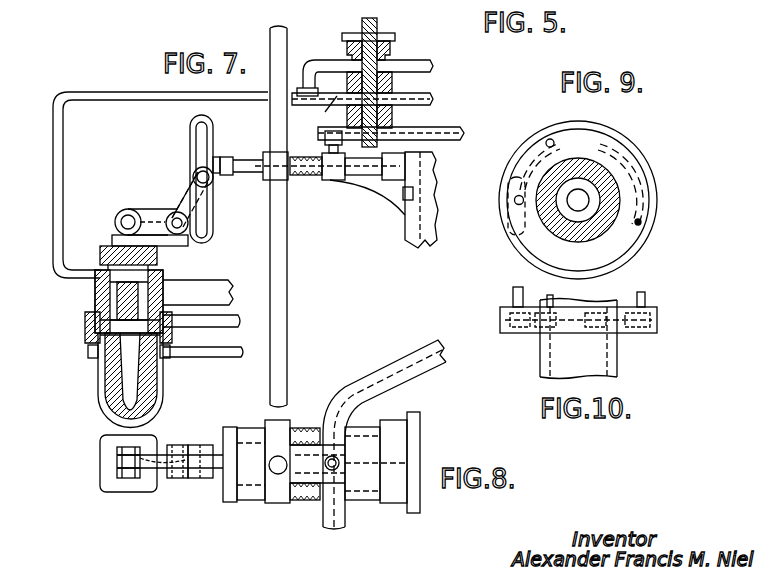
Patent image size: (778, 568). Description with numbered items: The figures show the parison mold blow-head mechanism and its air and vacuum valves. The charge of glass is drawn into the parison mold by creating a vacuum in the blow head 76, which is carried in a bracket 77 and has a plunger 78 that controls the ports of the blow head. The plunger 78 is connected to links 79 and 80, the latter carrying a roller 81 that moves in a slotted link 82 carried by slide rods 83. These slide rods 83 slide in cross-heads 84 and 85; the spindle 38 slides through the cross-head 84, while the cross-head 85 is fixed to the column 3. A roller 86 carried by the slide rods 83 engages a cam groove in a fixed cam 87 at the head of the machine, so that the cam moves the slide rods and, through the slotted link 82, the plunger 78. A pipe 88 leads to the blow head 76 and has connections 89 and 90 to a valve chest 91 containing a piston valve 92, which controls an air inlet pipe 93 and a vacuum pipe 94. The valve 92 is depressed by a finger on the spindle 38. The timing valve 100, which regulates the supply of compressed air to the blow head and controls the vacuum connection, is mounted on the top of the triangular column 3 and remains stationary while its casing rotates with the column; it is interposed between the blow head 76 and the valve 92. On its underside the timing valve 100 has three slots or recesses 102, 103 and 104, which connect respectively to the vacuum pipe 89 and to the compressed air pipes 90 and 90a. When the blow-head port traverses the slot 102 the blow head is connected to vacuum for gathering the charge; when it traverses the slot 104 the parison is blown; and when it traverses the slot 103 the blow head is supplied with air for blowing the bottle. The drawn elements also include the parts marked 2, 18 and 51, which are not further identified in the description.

In FIG. 9, the shaft 2 is at (604, 162).
In FIG. 10, the shaft 2 is at (595, 360).
In FIG. 7, the column 3 is at (414, 247).
In FIG. 7, the bulb housing 18 is at (100, 405).
In FIG. 8, the bulb housing 18 is at (122, 482).
In FIG. 7, the spindle 38 is at (287, 246).
In FIG. 8, the spindle 38 is at (282, 474).
In FIG. 7, the nut 51 is at (95, 326).
In FIG. 7, the blow head 76 is at (95, 297).
In FIG. 7, the bracket 77 is at (196, 292).
In FIG. 7, the plunger 78 is at (157, 258).
In FIG. 8, the plunger 78 is at (117, 462).
In FIG. 7, the link 79 is at (164, 213).
In FIG. 8, the link 79 is at (166, 470).
In FIG. 7, the link 80 is at (190, 192).
In FIG. 8, the link 80 is at (181, 445).
In FIG. 7, the roller 81 is at (210, 183).
In FIG. 7, the slotted link 82 is at (190, 150).
In FIG. 8, the slotted link 82 is at (205, 445).
In FIG. 7, the slide rods 83 is at (250, 158).
In FIG. 8, the slide rods 83 is at (250, 428).
In FIG. 7, the cross-head 84 is at (286, 180).
In FIG. 8, the cross-head 84 is at (285, 425).
In FIG. 7, the cross-head 85 is at (386, 174).
In FIG. 8, the cross-head 85 is at (400, 447).
In FIG. 7, the roller 86 is at (325, 136).
In FIG. 8, the roller 86 is at (340, 470).
In FIG. 7, the fixed cam 87 is at (430, 129).
In FIG. 8, the fixed cam 87 is at (408, 376).
In FIG. 7, the pipe 88 is at (62, 165).
In FIG. 7, the vacuum pipe 89 is at (322, 111).
In FIG. 9, the vacuum pipe 89 is at (514, 201).
In FIG. 10, the vacuum pipe 89 is at (513, 292).
In FIG. 7, the compressed air pipe 90 is at (328, 66).
In FIG. 9, the compressed air pipe 90 is at (642, 222).
In FIG. 10, the compressed air pipe 90 is at (645, 297).
In FIG. 9, the compressed air pipe 90a is at (554, 140).
In FIG. 10, the compressed air pipe 90a is at (552, 300).
In FIG. 7, the valve chest 91 is at (393, 52).
In FIG. 7, the piston valve 92 is at (402, 78).
In FIG. 7, the air inlet pipe 93 is at (422, 66).
In FIG. 7, the vacuum pipe 94 is at (433, 99).
In FIG. 9, the timing valve 100 is at (616, 245).
In FIG. 10, the timing valve 100 is at (627, 322).
In FIG. 9, the slot 102 is at (509, 226).
In FIG. 9, the slot 103 is at (639, 167).
In FIG. 9, the slot 104 is at (545, 132).